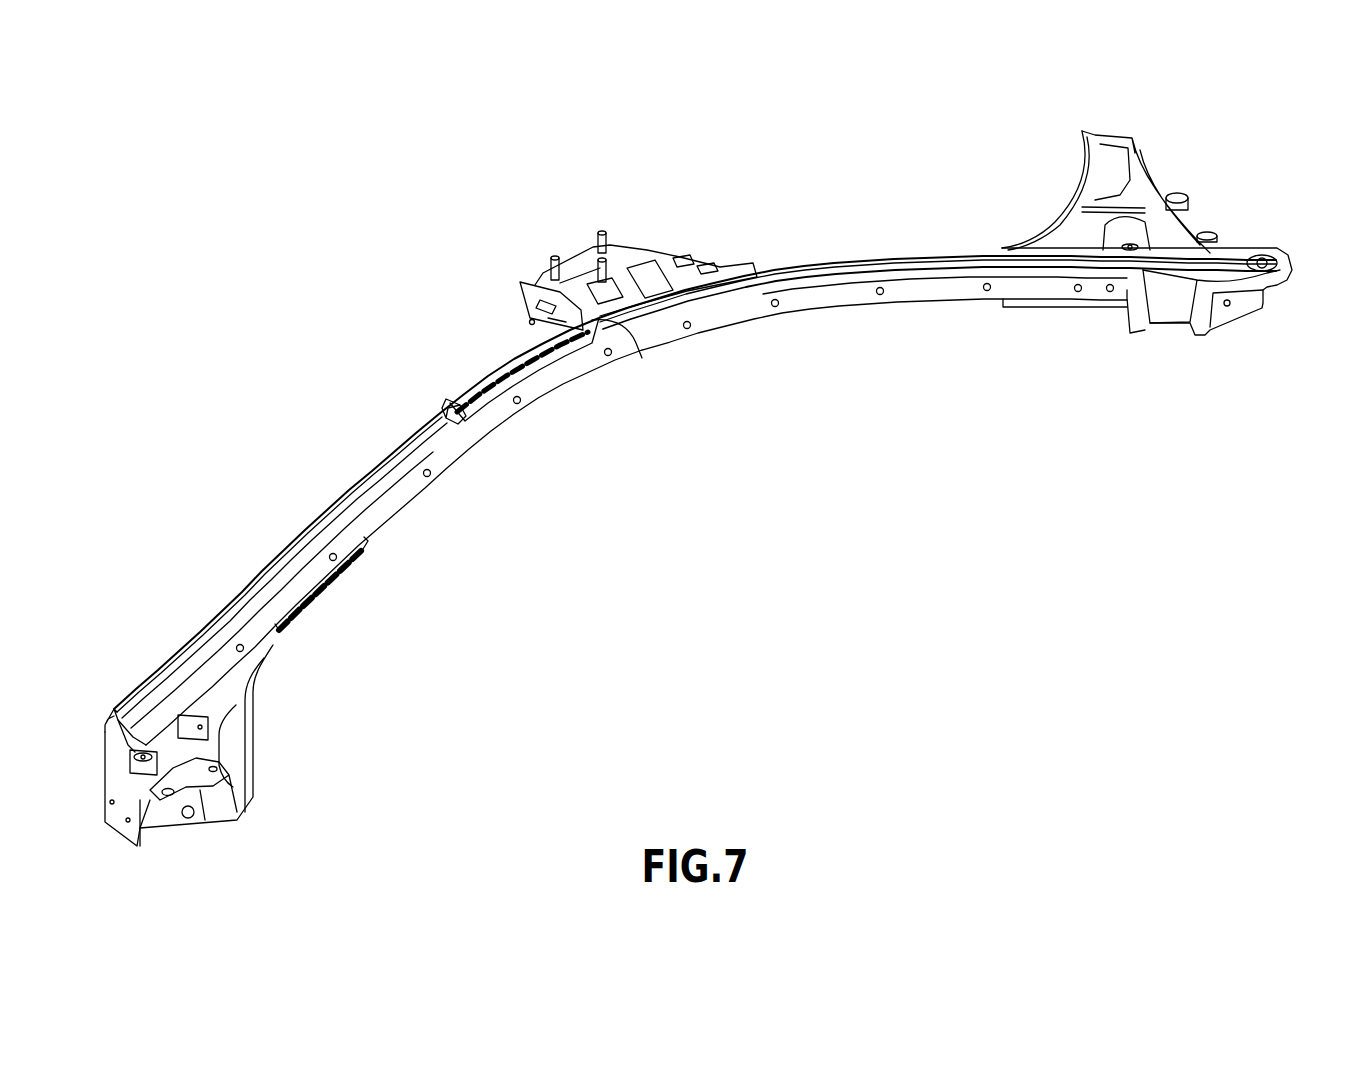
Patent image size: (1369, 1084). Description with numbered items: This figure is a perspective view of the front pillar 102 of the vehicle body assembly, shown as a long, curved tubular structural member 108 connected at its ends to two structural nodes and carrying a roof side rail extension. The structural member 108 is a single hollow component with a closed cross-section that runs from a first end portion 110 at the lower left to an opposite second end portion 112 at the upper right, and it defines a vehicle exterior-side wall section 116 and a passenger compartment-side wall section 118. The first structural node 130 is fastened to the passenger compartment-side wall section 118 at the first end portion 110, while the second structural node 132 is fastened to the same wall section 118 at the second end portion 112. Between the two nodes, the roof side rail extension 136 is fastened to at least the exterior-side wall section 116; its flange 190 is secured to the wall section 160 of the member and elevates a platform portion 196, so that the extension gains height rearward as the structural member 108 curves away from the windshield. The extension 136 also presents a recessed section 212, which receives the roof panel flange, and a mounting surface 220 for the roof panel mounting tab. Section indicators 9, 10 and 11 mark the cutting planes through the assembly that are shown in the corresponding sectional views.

The front pillar 102 is at (360, 475).
The structural member 108 is at (563, 383).
The first end portion 110 is at (285, 572).
The second end portion 112 is at (968, 272).
The vehicle exterior-side wall section 116 is at (820, 297).
The passenger compartment-side wall section 118 is at (815, 267).
The first left structural node 130 is at (228, 843).
The second left structural node 132 is at (1215, 170).
The roof side rail extension 136 is at (650, 215).
The wall section 160 is at (428, 438).
The flange 190 is at (467, 407).
The platform portion 196 is at (500, 367).
The recessed section 212 is at (630, 327).
The mounting surface 220 is at (536, 312).
The section line 9- 9 is at (165, 645).
The section line 10- 10 is at (244, 578).
The section line 11- 11 is at (926, 268).